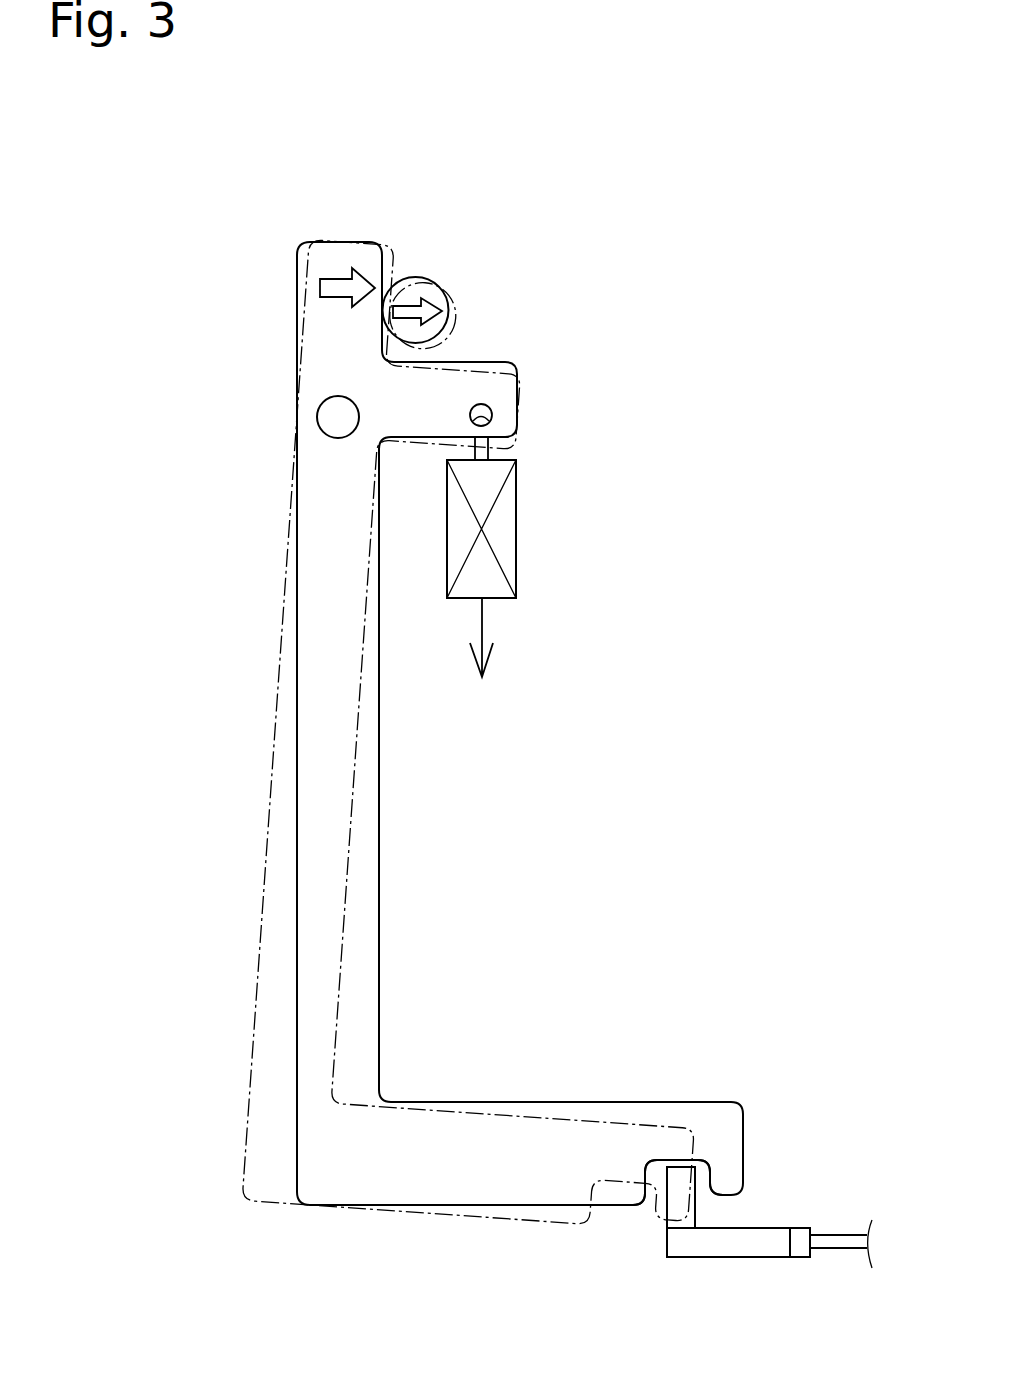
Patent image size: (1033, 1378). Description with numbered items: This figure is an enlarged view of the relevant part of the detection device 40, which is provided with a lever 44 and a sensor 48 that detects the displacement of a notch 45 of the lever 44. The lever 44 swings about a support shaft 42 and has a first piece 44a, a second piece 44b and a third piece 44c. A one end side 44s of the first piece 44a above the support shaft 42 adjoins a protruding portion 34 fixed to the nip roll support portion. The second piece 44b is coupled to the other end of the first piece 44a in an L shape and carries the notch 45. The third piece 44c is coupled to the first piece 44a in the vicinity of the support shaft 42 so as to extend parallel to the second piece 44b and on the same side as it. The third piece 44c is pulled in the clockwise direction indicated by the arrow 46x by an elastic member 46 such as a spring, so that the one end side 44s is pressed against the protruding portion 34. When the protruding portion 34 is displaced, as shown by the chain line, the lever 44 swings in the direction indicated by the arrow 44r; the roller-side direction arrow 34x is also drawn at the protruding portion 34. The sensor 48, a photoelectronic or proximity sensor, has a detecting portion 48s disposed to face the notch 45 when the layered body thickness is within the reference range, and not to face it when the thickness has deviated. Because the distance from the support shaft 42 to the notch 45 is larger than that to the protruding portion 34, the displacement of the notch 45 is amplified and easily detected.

The protruding portion 34 is at (450, 318).
The roller axis 34x is at (408, 322).
The detection device 40 is at (752, 345).
The support shaft 42 is at (330, 413).
The lever 44 is at (557, 736).
The first piece 44a is at (372, 748).
The second piece 44b is at (523, 1110).
The third piece 44c is at (500, 412).
The arrow 44r is at (340, 275).
The one end side 44s is at (318, 322).
The notch 45 is at (660, 1185).
The elastic member 46 is at (517, 528).
The arrow 46x is at (483, 620).
The sensor 48 is at (740, 1257).
The detecting portion 48s is at (678, 1178).